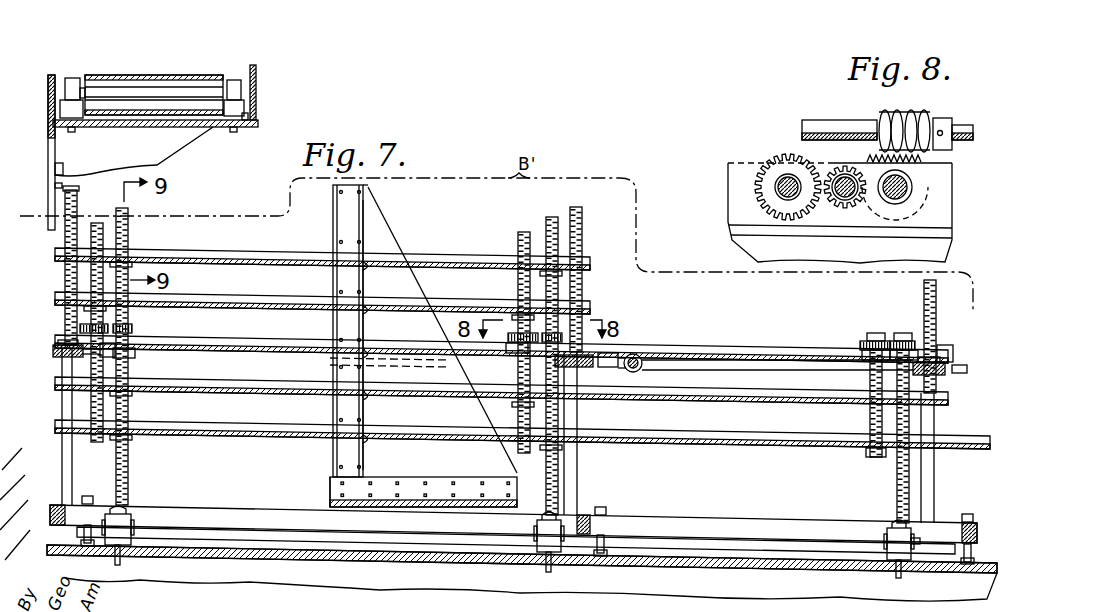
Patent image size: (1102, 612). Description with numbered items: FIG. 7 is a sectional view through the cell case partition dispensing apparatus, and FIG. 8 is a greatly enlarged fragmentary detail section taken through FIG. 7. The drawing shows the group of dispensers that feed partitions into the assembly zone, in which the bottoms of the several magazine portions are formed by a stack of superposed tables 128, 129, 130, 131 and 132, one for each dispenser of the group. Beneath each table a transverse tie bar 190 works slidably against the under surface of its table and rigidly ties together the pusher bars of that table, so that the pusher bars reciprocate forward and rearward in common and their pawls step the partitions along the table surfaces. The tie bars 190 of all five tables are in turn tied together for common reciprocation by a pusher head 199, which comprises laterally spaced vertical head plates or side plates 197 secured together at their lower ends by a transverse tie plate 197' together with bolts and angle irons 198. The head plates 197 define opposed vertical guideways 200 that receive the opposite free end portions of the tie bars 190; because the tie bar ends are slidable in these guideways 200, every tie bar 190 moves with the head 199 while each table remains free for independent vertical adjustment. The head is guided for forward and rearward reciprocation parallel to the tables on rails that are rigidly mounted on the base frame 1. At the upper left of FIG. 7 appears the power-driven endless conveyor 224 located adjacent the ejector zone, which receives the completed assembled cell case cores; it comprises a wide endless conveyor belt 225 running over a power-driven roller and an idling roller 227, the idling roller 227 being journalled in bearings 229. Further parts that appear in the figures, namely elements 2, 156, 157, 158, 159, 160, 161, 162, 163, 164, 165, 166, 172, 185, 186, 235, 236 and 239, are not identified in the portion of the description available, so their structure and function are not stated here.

In FIG. 7, the base frame 1 is at (353, 572).
In FIG. 7, the frame plate 2 is at (50, 130).
In FIG. 7, the table 128 is at (290, 247).
In FIG. 7, the table 129 is at (273, 300).
In FIG. 7, the table 130 is at (253, 339).
In FIG. 8, the table 130 is at (940, 208).
In FIG. 7, the table 131 is at (253, 384).
In FIG. 7, the table 132 is at (247, 426).
In FIG. 7, the base beam 156 is at (722, 523).
In FIG. 7, the drive shaft 157 is at (63, 463).
In FIG. 8, the drive shaft 157 is at (905, 185).
In FIG. 7, the worm gear 158 is at (60, 348).
In FIG. 8, the worm gear 158 is at (920, 160).
In FIG. 7, the screw shaft 159 is at (129, 468).
In FIG. 8, the screw shaft 159 is at (840, 193).
In FIG. 7, the rail bracket 160 is at (132, 349).
In FIG. 7, the clamp 161 is at (135, 264).
In FIG. 7, the worm 162 is at (75, 357).
In FIG. 8, the worm 162 is at (890, 112).
In FIG. 7, the shaft 163 is at (782, 366).
In FIG. 8, the shaft 163 is at (820, 128).
In FIG. 7, the bearing block 164 is at (100, 356).
In FIG. 7, the bearing 165 is at (636, 355).
In FIG. 7, the coupling shaft 166 is at (641, 369).
In FIG. 7, the gear box 172 is at (123, 540).
In FIG. 7, the gear 185 is at (90, 438).
In FIG. 8, the gear 185 is at (778, 188).
In FIG. 7, the collar 186 is at (868, 452).
In FIG. 7, the transverse tie bar 190 is at (347, 268).
In FIG. 7, the vertical head plate 197 is at (417, 335).
In FIG. 7, the transverse tie plate 197' is at (297, 492).
In FIG. 7, the angle irons and bolts 198 is at (322, 486).
In FIG. 7, the pusher head 199 is at (393, 233).
In FIG. 7, the vertical guideway 200 is at (352, 207).
In FIG. 7, the endless conveyor 224 is at (113, 75).
In FIG. 7, the endless conveyor belt 225 is at (143, 75).
In FIG. 7, the idling roller 227 is at (173, 85).
In FIG. 7, the bearings 229 is at (72, 78).
In FIG. 7, the small gear 235 is at (132, 328).
In FIG. 8, the small gear 235 is at (842, 168).
In FIG. 7, the large gear 236 is at (80, 328).
In FIG. 8, the large gear 236 is at (777, 158).
In FIG. 7, the side plate 239 is at (258, 88).